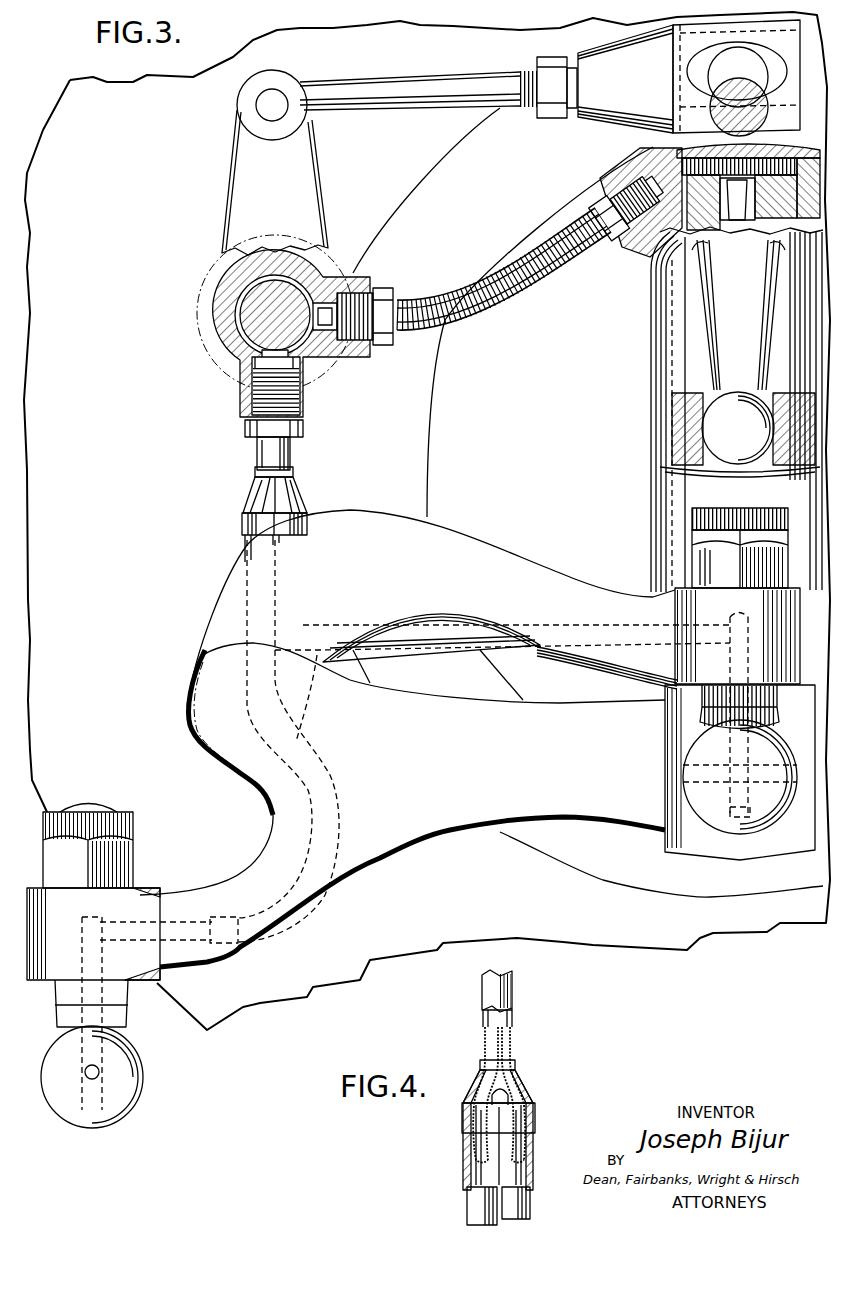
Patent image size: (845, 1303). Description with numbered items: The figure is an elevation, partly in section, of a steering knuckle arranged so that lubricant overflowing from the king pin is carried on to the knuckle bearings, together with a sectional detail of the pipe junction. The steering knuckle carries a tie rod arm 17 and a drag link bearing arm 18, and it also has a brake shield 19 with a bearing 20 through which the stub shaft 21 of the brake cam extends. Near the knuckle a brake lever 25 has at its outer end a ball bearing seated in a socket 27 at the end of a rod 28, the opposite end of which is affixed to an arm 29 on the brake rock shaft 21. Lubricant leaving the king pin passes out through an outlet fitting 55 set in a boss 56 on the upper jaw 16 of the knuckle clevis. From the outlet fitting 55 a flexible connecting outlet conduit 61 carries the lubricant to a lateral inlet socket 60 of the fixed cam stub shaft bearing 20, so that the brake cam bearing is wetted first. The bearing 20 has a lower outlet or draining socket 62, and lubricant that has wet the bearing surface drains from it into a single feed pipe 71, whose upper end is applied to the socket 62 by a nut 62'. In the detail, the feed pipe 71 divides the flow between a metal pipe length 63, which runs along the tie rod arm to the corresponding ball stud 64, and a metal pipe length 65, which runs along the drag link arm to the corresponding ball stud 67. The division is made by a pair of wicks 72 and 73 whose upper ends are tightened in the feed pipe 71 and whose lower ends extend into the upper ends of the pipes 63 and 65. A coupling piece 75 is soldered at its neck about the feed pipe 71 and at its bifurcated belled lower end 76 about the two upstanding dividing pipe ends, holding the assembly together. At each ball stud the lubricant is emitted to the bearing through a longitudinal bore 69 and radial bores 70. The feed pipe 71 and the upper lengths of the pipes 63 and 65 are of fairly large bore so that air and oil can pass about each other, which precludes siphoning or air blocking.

In FIG. 3, the upper jaw 16 is at (808, 147).
In FIG. 3, the tie rod arm 17 is at (222, 960).
In FIG. 3, the drag link bearing arm 18 is at (615, 658).
In FIG. 3, the brake shield 19 is at (222, 60).
In FIG. 3, the bearing 20 is at (218, 312).
In FIG. 3, the stub shaft 21 is at (254, 324).
In FIG. 3, the brake lever 25 is at (727, 345).
In FIG. 3, the socket 27 is at (643, 53).
In FIG. 3, the rod 28 is at (431, 80).
In FIG. 3, the arm 29 is at (306, 192).
In FIG. 3, the outlet fitting 55 is at (606, 182).
In FIG. 3, the boss 56 is at (643, 243).
In FIG. 3, the lateral inlet socket 60 is at (354, 358).
In FIG. 3, the connecting outlet conduit 61 is at (508, 288).
In FIG. 3, the lower outlet or draining socket 62 is at (241, 386).
In FIG. 3, the nut 62' is at (300, 433).
In FIG. 3, the metal pipe length 63 is at (247, 708).
In FIG. 4, the metal pipe length 63 is at (466, 1193).
In FIG. 3, the ball stud 64 is at (143, 1082).
In FIG. 3, the metal pipe length 65 is at (437, 648).
In FIG. 4, the metal pipe length 65 is at (530, 1193).
In FIG. 3, the ball stud 67 is at (713, 810).
In FIG. 3, the longitudinal bore 69 is at (728, 735).
In FIG. 3, the radial bores 70 is at (770, 790).
In FIG. 3, the feed pipe 71 is at (268, 455).
In FIG. 4, the feed pipe 71 is at (512, 987).
In FIG. 4, the wick 72 is at (490, 1043).
In FIG. 4, the wick 73 is at (510, 1050).
In FIG. 3, the coupling piece 75 is at (262, 493).
In FIG. 4, the coupling piece 75 is at (528, 1088).
In FIG. 3, the bifurcated belled lower end 76 is at (244, 530).
In FIG. 4, the bifurcated belled lower end 76 is at (535, 1125).